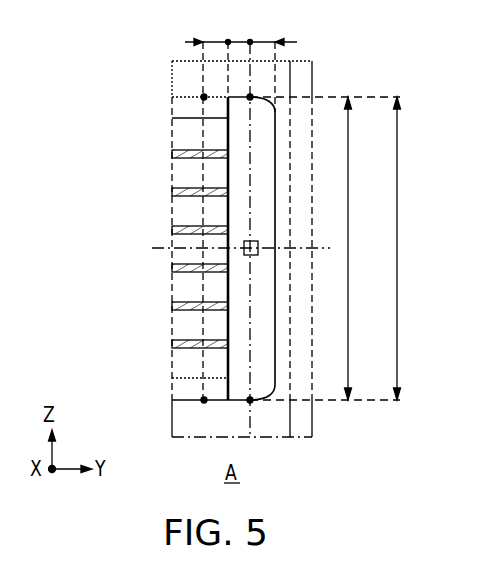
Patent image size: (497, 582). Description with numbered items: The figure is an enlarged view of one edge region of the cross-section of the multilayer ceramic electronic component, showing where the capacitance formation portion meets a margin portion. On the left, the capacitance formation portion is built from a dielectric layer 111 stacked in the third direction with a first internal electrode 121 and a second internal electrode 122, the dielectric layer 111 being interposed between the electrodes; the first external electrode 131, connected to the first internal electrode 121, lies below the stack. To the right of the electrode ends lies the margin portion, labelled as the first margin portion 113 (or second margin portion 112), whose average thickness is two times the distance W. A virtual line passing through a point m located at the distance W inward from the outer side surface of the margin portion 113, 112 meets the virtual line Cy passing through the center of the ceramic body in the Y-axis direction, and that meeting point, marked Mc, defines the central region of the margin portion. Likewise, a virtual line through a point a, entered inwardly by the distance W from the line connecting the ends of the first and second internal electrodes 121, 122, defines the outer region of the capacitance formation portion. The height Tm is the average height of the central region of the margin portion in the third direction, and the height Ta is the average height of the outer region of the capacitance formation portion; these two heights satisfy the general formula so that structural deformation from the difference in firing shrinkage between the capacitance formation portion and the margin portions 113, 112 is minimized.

The dielectric layer 111 is at (178, 178).
The second margin portion 112 is at (230, 330).
The first margin portion 113 is at (143, 287).
The first internal electrode 121 is at (183, 152).
The second internal electrode 122 is at (183, 196).
The first external electrode 131 is at (182, 415).
The point a is at (204, 97).
The point m is at (250, 99).
The virtual line Cy is at (228, 251).
The center mark Mc is at (258, 241).
The distance W is at (241, 30).
The average height of the central region of the margin portion Tm is at (364, 248).
The average height of the outer region of the capacitance formation portion Ta is at (407, 248).